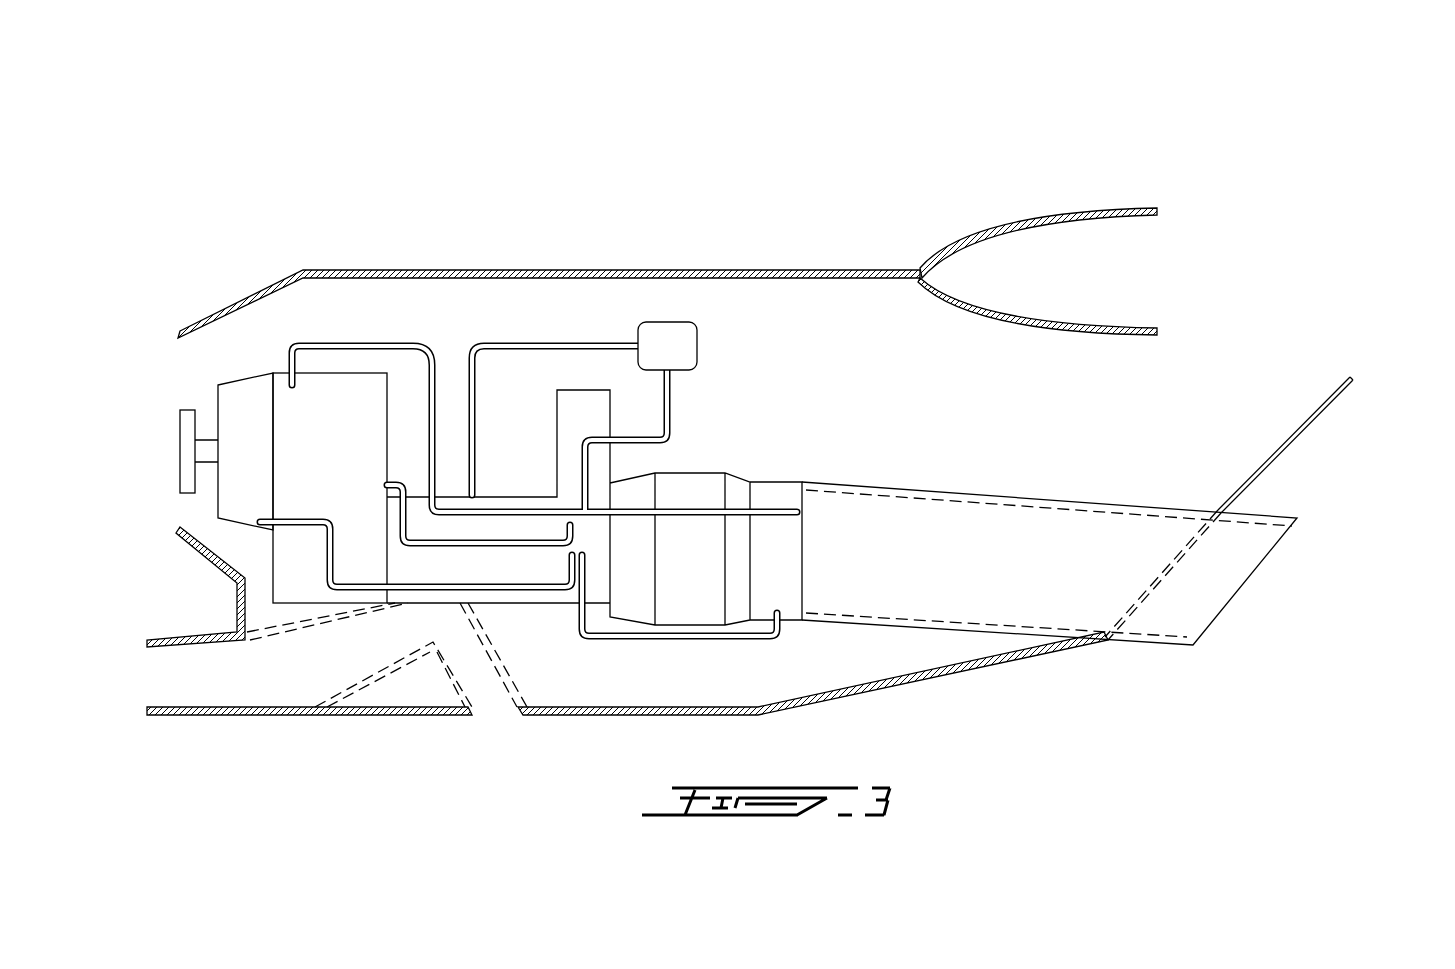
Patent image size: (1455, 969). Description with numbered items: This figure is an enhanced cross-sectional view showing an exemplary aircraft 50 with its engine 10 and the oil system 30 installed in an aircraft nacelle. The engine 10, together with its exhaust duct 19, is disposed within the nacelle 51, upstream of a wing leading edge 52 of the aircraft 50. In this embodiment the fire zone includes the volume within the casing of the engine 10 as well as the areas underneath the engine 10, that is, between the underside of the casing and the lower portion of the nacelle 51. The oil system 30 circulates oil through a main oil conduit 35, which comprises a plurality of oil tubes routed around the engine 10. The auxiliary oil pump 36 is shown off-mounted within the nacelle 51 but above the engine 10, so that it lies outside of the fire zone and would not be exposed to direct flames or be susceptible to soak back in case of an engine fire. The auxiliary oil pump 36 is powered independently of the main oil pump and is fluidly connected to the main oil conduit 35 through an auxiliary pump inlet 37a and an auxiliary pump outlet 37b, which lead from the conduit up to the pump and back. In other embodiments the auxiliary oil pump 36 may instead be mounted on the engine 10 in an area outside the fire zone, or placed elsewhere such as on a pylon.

The engine 10 is at (165, 437).
The exhaust duct 19 is at (1313, 520).
The oil system 30 is at (740, 422).
The main oil conduit 35 is at (455, 498).
The auxiliary oil pump 36 is at (667, 308).
The auxiliary pump inlet 37a is at (570, 343).
The auxiliary pump outlet 37b is at (670, 400).
The aircraft 50 is at (1295, 197).
The nacelle 51 is at (240, 272).
The wing leading edge 52 is at (1013, 213).